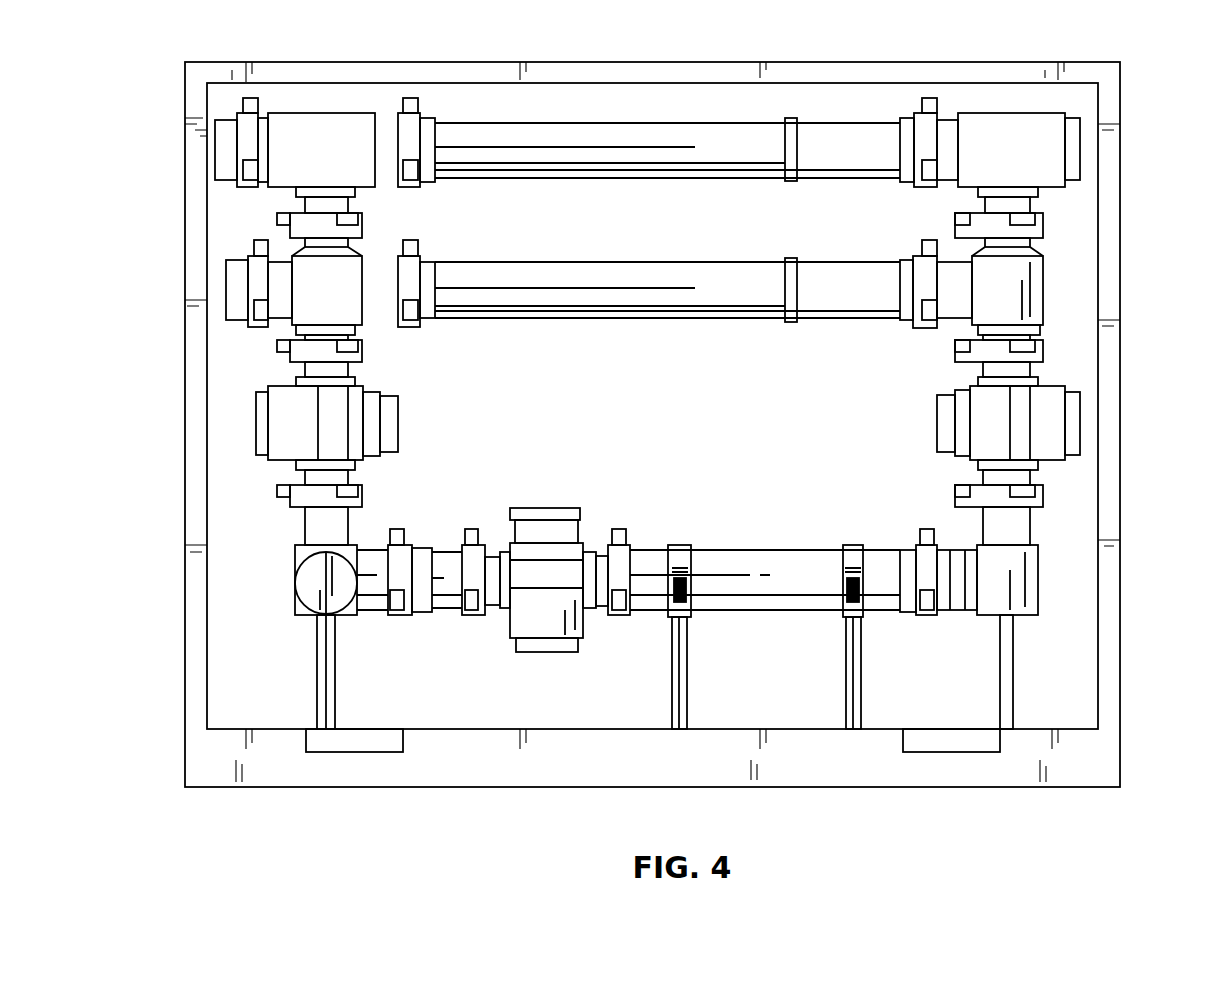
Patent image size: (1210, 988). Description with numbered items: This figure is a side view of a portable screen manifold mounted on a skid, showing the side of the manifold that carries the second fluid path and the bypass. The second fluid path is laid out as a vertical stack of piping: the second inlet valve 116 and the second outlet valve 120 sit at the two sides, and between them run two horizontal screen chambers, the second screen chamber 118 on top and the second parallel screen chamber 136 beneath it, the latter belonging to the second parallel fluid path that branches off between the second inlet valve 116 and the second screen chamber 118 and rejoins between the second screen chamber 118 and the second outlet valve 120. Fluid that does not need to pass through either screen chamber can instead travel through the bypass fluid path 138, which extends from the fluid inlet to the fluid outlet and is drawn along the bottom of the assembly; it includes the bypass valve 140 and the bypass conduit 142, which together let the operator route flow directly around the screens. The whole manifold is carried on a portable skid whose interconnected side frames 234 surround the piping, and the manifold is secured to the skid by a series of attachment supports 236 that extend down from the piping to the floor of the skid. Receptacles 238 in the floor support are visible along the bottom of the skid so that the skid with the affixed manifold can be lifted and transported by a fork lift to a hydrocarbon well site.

The second inlet valve 116 is at (290, 417).
The second screen chamber 118 is at (653, 137).
The second outlet valve 120 is at (1040, 415).
The second parallel screen chamber 136 is at (618, 316).
The bypass fluid path 138 is at (360, 605).
The bypass valve 140 is at (520, 627).
The bypass conduit 142 is at (762, 588).
The side frames 234 is at (195, 303).
The attachment supports 236 is at (317, 668).
The receptacles 238 is at (355, 740).